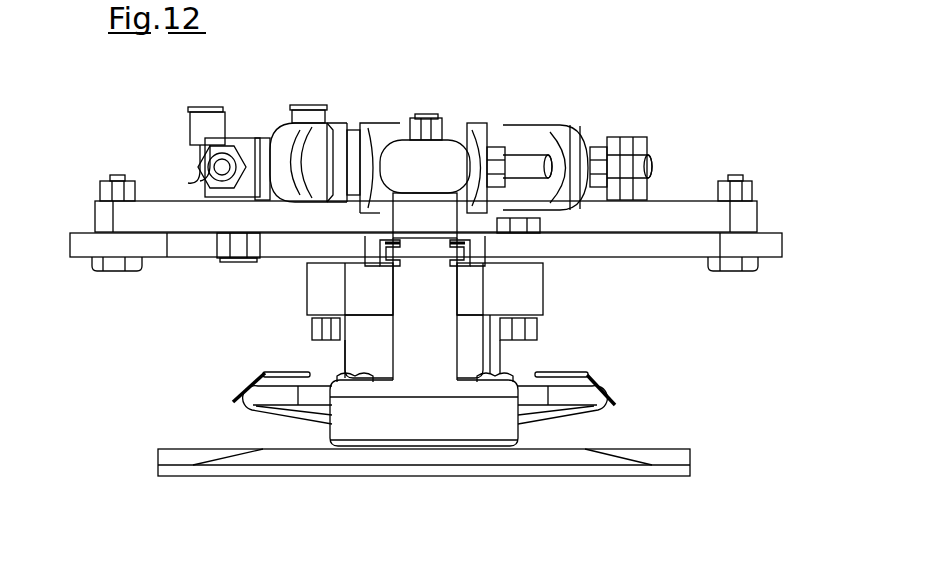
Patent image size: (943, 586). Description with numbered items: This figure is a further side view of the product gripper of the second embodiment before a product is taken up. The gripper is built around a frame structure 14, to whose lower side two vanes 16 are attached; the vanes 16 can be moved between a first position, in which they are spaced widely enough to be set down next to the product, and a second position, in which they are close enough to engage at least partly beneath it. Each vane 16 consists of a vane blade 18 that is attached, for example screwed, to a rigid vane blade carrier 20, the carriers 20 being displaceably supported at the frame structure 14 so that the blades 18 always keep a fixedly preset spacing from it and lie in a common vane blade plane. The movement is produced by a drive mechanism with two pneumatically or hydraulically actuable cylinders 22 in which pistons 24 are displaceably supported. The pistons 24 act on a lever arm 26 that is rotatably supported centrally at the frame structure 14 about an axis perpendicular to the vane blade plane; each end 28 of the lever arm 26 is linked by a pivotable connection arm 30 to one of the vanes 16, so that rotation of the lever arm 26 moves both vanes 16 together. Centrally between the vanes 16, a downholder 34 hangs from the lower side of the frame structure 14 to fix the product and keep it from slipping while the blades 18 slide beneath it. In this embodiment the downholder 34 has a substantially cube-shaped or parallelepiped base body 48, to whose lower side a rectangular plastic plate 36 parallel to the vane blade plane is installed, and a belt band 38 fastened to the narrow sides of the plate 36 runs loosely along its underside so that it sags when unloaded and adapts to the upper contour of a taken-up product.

The frame structure 14 is at (428, 242).
The vane 16 is at (475, 453).
The vane blade 18 is at (690, 462).
The vane blade carrier 20 is at (425, 376).
The cylinder 22 is at (353, 130).
The piston 24 is at (218, 167).
The lever arm 26 is at (674, 208).
The end of lever arm 28 is at (93, 212).
The connection arm 30 is at (180, 247).
The downholder 34 is at (382, 352).
The plastic plate 36 is at (607, 400).
The belt band 38 is at (603, 413).
The base body 48 is at (343, 357).